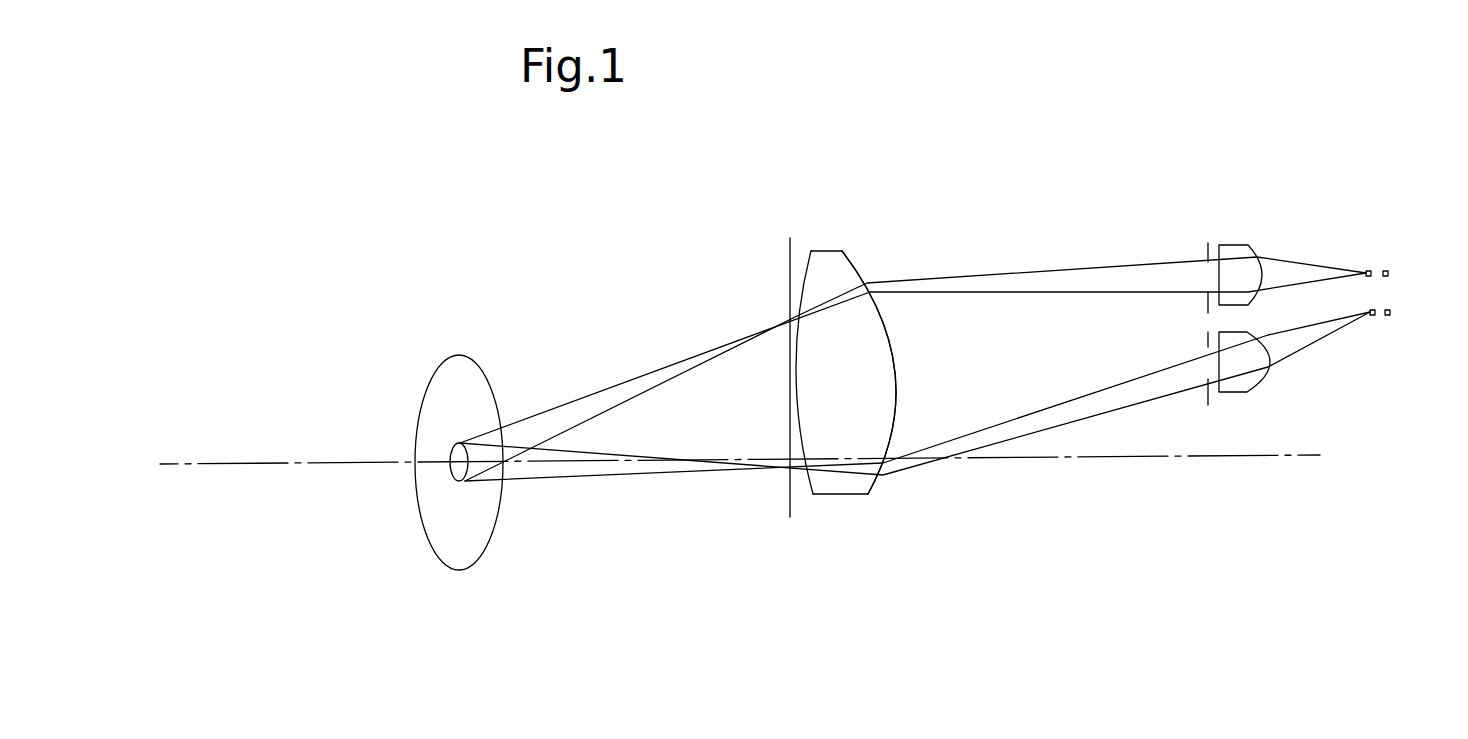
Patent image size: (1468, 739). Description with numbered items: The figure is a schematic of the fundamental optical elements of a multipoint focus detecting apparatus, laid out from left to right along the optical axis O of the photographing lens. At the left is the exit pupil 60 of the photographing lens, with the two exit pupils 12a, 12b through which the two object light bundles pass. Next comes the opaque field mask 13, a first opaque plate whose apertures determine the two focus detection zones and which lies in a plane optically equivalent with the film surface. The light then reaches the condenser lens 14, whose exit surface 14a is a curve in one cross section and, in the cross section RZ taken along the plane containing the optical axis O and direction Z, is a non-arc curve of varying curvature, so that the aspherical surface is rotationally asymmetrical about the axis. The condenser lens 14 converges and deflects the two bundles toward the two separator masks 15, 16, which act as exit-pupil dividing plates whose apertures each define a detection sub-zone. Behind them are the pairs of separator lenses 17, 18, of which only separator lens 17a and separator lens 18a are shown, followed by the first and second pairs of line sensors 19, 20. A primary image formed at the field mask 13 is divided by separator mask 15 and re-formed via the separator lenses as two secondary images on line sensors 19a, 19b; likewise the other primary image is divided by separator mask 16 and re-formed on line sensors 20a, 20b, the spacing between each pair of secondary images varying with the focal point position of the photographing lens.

The exit pupil 60 is at (468, 357).
The exit pupil 12a is at (390, 432).
The exit pupil 12b is at (457, 456).
The field mask 13 is at (788, 260).
The condenser lens 14 is at (849, 330).
The exit surface of condenser lens 14a is at (857, 267).
The cross section RZ is at (895, 367).
The separator mask 15 is at (1170, 261).
The separator mask 16 is at (1166, 392).
The pair of separator lenses 17 is at (1260, 237).
The separator lens 17a is at (1236, 250).
The pair of separator lenses 18 is at (1265, 387).
The separator lens 18a is at (1250, 384).
The first pair of line sensors 19 is at (1392, 224).
The line sensor 19a is at (1368, 270).
The line sensor 19b is at (1389, 270).
The second pair of line sensors 20 is at (1392, 367).
The line sensor 20a is at (1373, 318).
The line sensor 20b is at (1418, 339).
The optical axis O is at (755, 455).